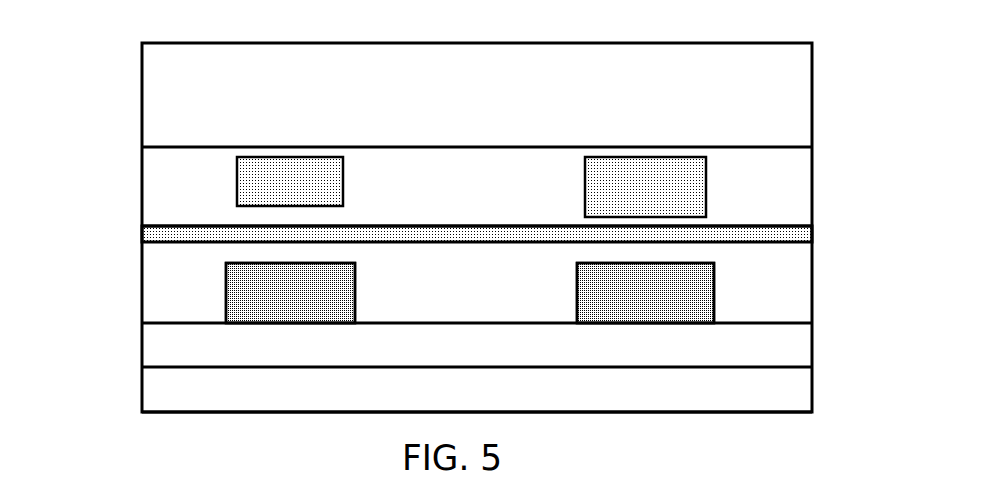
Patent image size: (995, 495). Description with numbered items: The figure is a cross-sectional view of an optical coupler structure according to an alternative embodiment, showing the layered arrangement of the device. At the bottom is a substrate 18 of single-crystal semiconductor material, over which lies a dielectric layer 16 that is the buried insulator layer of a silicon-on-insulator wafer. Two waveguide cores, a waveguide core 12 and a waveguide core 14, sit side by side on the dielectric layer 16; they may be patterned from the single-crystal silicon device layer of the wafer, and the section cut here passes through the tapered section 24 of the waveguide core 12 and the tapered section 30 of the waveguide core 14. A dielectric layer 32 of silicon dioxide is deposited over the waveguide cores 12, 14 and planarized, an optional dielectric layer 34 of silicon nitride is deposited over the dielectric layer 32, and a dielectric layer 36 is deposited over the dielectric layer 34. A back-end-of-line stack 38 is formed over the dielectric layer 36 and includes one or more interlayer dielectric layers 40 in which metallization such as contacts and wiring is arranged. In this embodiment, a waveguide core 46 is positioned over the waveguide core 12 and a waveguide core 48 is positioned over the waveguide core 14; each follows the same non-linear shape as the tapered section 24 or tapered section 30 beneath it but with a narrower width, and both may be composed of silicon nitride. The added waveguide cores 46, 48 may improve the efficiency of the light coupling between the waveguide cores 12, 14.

The waveguide core 12 is at (216, 284).
The waveguide core 14 is at (725, 288).
The dielectric layer 16 is at (180, 345).
The substrate 18 is at (182, 397).
The tapered section 24 is at (333, 292).
The tapered section 30 is at (610, 290).
The dielectric layer 32 is at (158, 302).
The dielectric layer 34 is at (777, 239).
The dielectric layer 36 is at (165, 205).
The back-end-of-line stack 38 is at (822, 85).
The interlayer dielectric layer 40 is at (168, 98).
The waveguide core 46 is at (301, 178).
The waveguide core 48 is at (655, 170).